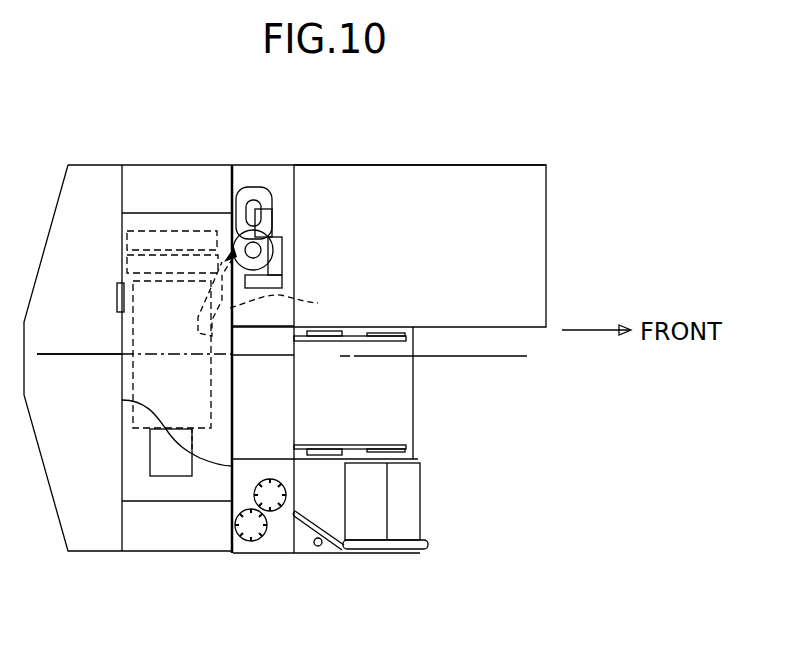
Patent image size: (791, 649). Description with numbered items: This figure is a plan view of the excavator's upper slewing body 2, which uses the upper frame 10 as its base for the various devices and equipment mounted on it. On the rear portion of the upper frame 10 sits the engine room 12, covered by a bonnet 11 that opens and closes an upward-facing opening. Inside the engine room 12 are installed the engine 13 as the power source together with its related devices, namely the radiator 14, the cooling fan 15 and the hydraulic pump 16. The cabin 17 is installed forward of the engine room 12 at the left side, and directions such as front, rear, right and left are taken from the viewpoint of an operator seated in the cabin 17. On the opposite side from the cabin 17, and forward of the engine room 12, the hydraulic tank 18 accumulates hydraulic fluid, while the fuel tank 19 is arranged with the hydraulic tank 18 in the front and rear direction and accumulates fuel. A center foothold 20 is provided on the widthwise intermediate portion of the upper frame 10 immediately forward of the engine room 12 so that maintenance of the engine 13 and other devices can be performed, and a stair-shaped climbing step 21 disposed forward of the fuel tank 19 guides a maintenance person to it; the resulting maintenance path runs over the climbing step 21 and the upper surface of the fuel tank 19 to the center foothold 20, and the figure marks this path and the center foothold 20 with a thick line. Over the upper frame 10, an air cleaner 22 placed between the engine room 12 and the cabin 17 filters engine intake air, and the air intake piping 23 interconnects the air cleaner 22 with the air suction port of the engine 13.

The upper slewing body 2 is at (222, 158).
The upper frame 10 is at (413, 402).
The bonnet 11 is at (125, 331).
The engine room 12 is at (128, 448).
The engine 13 is at (132, 383).
The radiator 14 is at (173, 231).
The cooling fan 15 is at (127, 263).
The hydraulic pump 16 is at (163, 478).
The cabin 17 is at (427, 165).
The hydraulic tank 18 is at (243, 551).
The fuel tank 19 is at (303, 551).
The center foothold 20 is at (288, 390).
The climbing step 21 is at (412, 503).
The air cleaner 22 is at (283, 252).
The air intake piping 23 is at (275, 291).